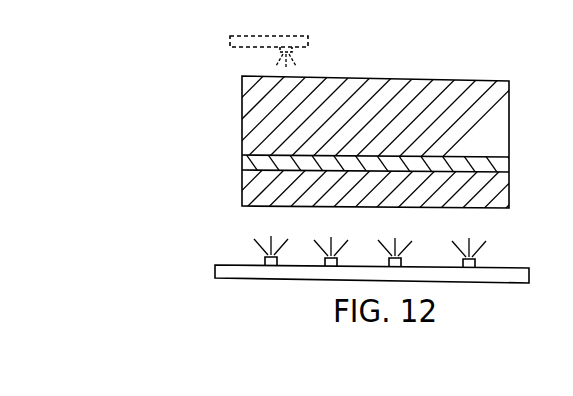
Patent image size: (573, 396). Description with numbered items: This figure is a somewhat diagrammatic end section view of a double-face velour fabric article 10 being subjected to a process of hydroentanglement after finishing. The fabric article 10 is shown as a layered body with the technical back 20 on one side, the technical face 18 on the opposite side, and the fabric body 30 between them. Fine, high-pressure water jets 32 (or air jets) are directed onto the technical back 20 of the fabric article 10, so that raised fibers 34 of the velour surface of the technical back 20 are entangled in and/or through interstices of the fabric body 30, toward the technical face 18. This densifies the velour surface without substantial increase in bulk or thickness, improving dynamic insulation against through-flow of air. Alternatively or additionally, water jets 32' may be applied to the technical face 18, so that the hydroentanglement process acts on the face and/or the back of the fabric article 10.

The fabric article 10 is at (520, 100).
The technical back 20 is at (415, 79).
The fabric body 30 is at (510, 167).
The technical face 18 is at (497, 209).
The raised fibers 34 is at (249, 193).
The water jets 32 is at (372, 259).
The water jets 32' is at (269, 39).